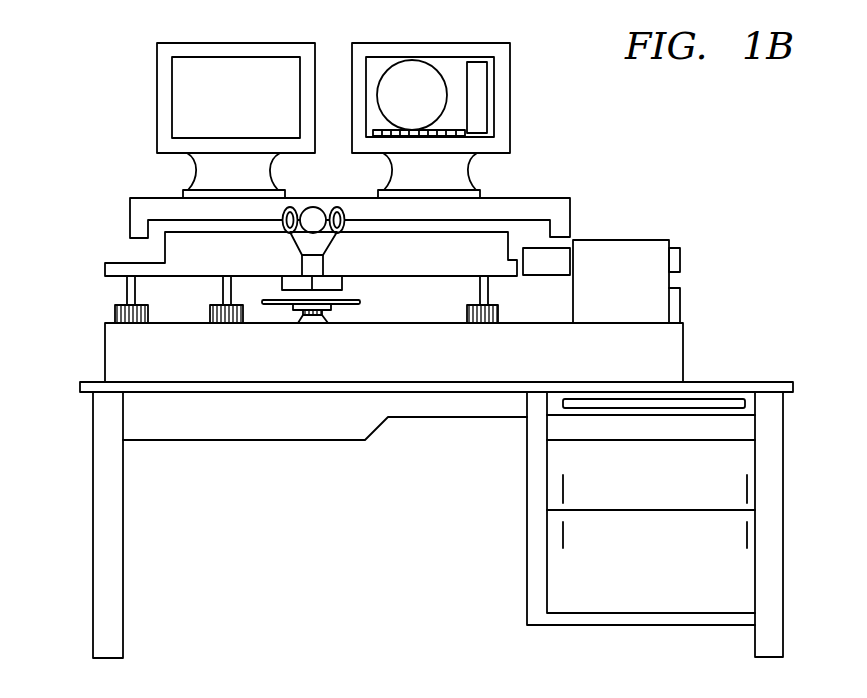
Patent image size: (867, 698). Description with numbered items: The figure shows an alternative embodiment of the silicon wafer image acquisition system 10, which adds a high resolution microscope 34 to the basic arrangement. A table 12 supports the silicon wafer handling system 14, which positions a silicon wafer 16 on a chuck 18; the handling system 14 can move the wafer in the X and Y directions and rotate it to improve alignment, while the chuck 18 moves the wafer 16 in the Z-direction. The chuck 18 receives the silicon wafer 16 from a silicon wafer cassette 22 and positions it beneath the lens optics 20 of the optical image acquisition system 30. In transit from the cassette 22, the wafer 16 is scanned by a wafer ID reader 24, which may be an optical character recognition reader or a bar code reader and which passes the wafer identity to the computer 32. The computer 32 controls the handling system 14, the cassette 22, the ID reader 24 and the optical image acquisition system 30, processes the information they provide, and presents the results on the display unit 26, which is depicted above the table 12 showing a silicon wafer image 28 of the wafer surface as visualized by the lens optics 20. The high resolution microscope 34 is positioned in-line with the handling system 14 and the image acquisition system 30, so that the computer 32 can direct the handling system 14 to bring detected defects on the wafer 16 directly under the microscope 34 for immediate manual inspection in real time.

The silicon wafer image acquisition system 10 is at (670, 140).
The table 12 is at (93, 425).
The silicon wafer handling system 14 is at (105, 354).
The silicon wafer 16 is at (348, 312).
The chuck 18 is at (292, 305).
The lens optics 20 is at (272, 283).
The silicon wafer cassette 22 is at (652, 240).
The wafer ID reader 24 is at (572, 260).
The display unit 26 is at (157, 90).
The silicon wafer image 28 is at (408, 60).
The optical image acquisition system 30 is at (105, 269).
The computer 32 is at (745, 457).
The high resolution microscope 34 is at (331, 242).